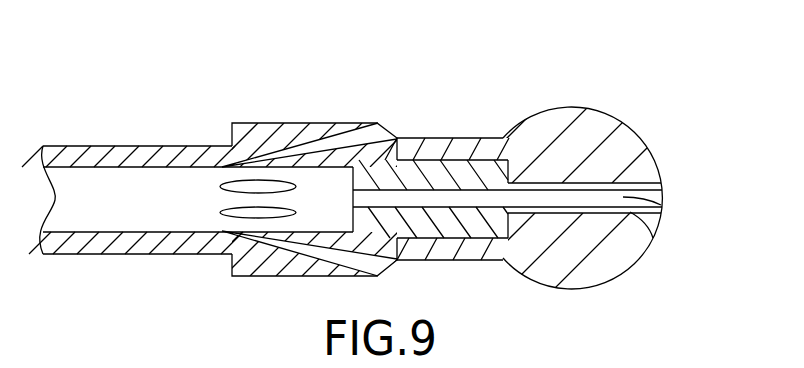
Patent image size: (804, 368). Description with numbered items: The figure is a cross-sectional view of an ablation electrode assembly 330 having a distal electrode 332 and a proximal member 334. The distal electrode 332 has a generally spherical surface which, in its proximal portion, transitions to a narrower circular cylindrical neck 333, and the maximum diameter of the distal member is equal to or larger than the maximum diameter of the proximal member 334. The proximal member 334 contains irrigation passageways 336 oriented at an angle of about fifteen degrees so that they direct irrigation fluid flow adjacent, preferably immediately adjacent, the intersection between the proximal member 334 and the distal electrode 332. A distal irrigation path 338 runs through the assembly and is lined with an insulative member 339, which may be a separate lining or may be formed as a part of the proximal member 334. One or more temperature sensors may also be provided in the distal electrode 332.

The ablation electrode assembly 330 is at (630, 58).
The distal electrode 332 is at (621, 134).
The circular cylindrical neck 333 is at (477, 150).
The proximal member 334 is at (258, 137).
The irrigation passageways 336 is at (373, 133).
The distal irrigation path 338 is at (661, 208).
The insulative member 339 is at (652, 238).